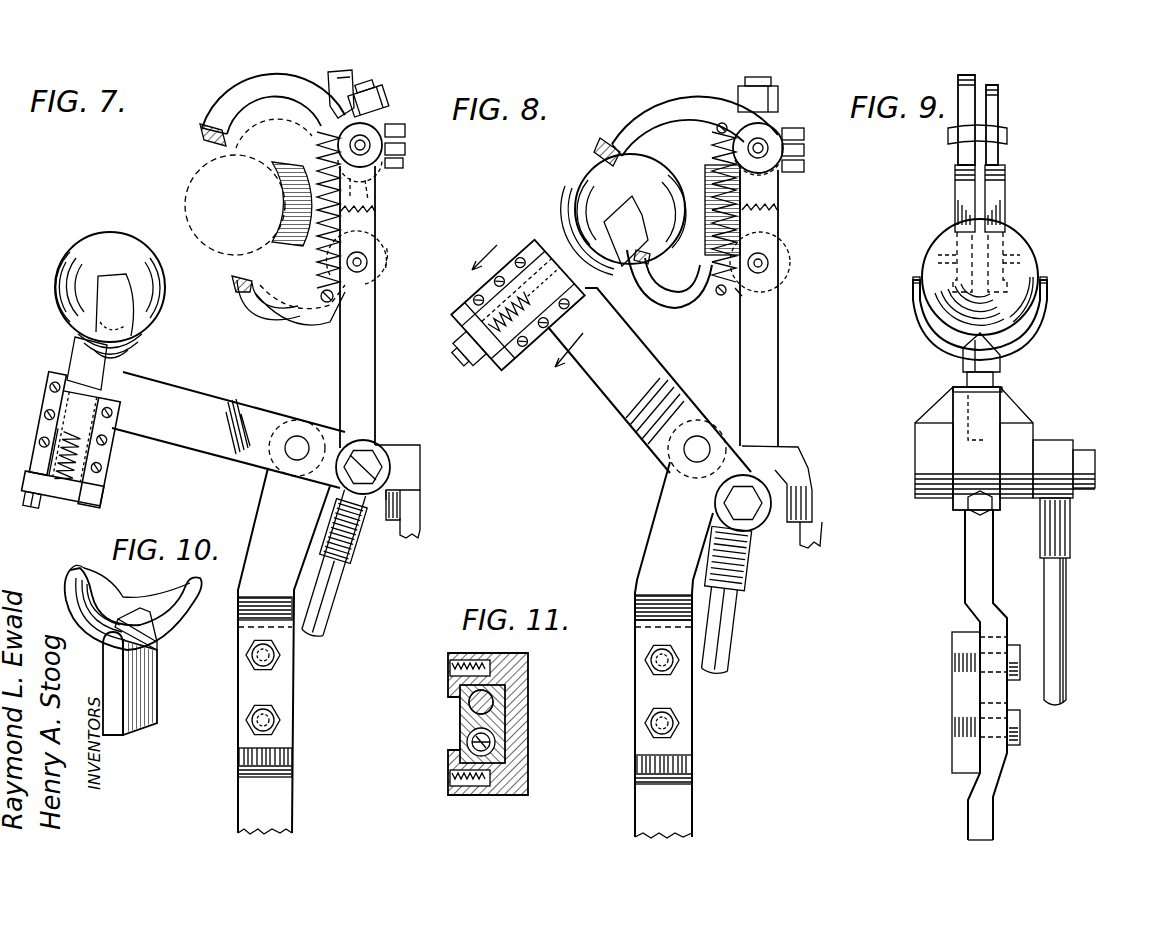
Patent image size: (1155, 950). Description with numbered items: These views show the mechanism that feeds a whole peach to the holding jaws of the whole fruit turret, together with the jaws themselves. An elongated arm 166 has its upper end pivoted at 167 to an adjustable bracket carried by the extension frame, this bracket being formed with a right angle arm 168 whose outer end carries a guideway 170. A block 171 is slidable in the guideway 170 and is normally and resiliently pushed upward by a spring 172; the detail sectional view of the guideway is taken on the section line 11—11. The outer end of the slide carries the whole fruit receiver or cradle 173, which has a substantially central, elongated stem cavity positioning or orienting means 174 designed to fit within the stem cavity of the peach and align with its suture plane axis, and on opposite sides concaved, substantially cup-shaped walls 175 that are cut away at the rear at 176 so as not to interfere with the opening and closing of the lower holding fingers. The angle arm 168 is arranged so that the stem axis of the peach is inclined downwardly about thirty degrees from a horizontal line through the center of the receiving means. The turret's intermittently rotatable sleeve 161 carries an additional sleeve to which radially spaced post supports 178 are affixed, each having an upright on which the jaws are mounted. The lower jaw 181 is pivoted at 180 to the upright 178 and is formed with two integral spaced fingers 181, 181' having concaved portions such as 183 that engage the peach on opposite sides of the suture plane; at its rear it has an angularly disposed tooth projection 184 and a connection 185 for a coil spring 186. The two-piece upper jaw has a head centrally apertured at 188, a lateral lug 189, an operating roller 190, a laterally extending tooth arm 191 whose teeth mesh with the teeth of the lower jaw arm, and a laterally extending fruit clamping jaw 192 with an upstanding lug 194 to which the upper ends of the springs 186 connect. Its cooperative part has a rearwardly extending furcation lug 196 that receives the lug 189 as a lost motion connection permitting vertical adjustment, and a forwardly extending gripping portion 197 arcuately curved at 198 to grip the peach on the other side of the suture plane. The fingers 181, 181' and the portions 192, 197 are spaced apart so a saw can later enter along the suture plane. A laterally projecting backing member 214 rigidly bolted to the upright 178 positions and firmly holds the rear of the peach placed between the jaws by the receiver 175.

In FIG. 8, the section line 11 is at (542, 295).
In FIG. 7, the intermittently rotatable sleeve 161 is at (420, 534).
In FIG. 8, the intermittently rotatable sleeve 161 is at (820, 530).
In FIG. 7, the elongated arm 166 is at (338, 578).
In FIG. 8, the elongated arm 166 is at (736, 632).
In FIG. 9, the elongated arm 166 is at (1052, 590).
In FIG. 7, the pivot 167 is at (298, 446).
In FIG. 7, the right angle arm 168 is at (184, 400).
In FIG. 8, the right angle arm 168 is at (648, 366).
In FIG. 9, the right angle arm 168 is at (978, 800).
In FIG. 7, the guideway 170 is at (48, 406).
In FIG. 8, the guideway 170 is at (510, 366).
In FIG. 11, the guideway 170 is at (520, 746).
In FIG. 9, the guideway 170 is at (975, 450).
In FIG. 11, the block 171 is at (462, 712).
In FIG. 7, the spring 172 is at (96, 488).
In FIG. 8, the spring 172 is at (486, 348).
In FIG. 11, the spring 172 is at (462, 742).
In FIG. 7, the whole fruit receiver or cradle 173 is at (78, 362).
In FIG. 10, the whole fruit receiver or cradle 173 is at (125, 678).
In FIG. 9, the whole fruit receiver or cradle 173 is at (996, 380).
In FIG. 7, the stem cavity positioning or orienting means 174 is at (78, 303).
In FIG. 10, the stem cavity positioning or orienting means 174 is at (158, 652).
In FIG. 9, the stem cavity positioning or orienting means 174 is at (963, 358).
In FIG. 7, the concaved walls 175 is at (108, 287).
In FIG. 10, the concaved walls 175 is at (78, 566).
In FIG. 8, the concaved walls 175 is at (590, 200).
In FIG. 9, the concaved walls 175 is at (925, 322).
In FIG. 7, the cut away portion 176 is at (122, 347).
In FIG. 10, the cut away portion 176 is at (163, 615).
In FIG. 8, the cut away portion 176 is at (587, 230).
In FIG. 9, the cut away portion 176 is at (1040, 312).
In FIG. 7, the post support 178 is at (410, 465).
In FIG. 8, the post support 178 is at (812, 500).
In FIG. 7, the pivot 180 is at (366, 262).
In FIG. 8, the pivot 180 is at (768, 262).
In FIG. 7, the lower jaw 181 is at (300, 318).
In FIG. 8, the lower jaw 181 is at (669, 297).
In FIG. 9, the lower jaw 181 is at (924, 262).
In FIG. 9, the lower jaw holding portion 181' is at (1024, 254).
In FIG. 7, the concaved portion 183 is at (236, 284).
In FIG. 7, the tooth projection 184 is at (378, 232).
In FIG. 7, the spring connection 185 is at (326, 320).
In FIG. 8, the spring connection 185 is at (740, 293).
In FIG. 7, the coil spring 186 is at (355, 226).
In FIG. 8, the coil spring 186 is at (745, 232).
In FIG. 7, the aperture 188 is at (372, 116).
In FIG. 7, the lateral lug 189 is at (404, 150).
In FIG. 8, the lateral lug 189 is at (806, 150).
In FIG. 7, the operating roller 190 is at (366, 106).
In FIG. 8, the operating roller 190 is at (776, 96).
In FIG. 7, the tooth arm 191 is at (370, 186).
In FIG. 7, the fruit clamping jaw 192 is at (216, 86).
In FIG. 9, the fruit clamping jaw 192 is at (955, 122).
In FIG. 7, the upstanding lug 194 is at (321, 89).
In FIG. 7, the rearwardly extending lug 196 is at (390, 128).
In FIG. 8, the rearwardly extending lug 196 is at (803, 166).
In FIG. 7, the gripping portion 197 is at (224, 102).
In FIG. 8, the gripping portion 197 is at (658, 106).
In FIG. 9, the gripping portion 197 is at (992, 122).
In FIG. 7, the arcuate curve 198 is at (204, 134).
In FIG. 8, the arcuate curve 198 is at (598, 146).
In FIG. 7, the backing member 214 is at (290, 214).
In FIG. 8, the backing member 214 is at (704, 190).
In FIG. 9, the backing member 214 is at (958, 200).